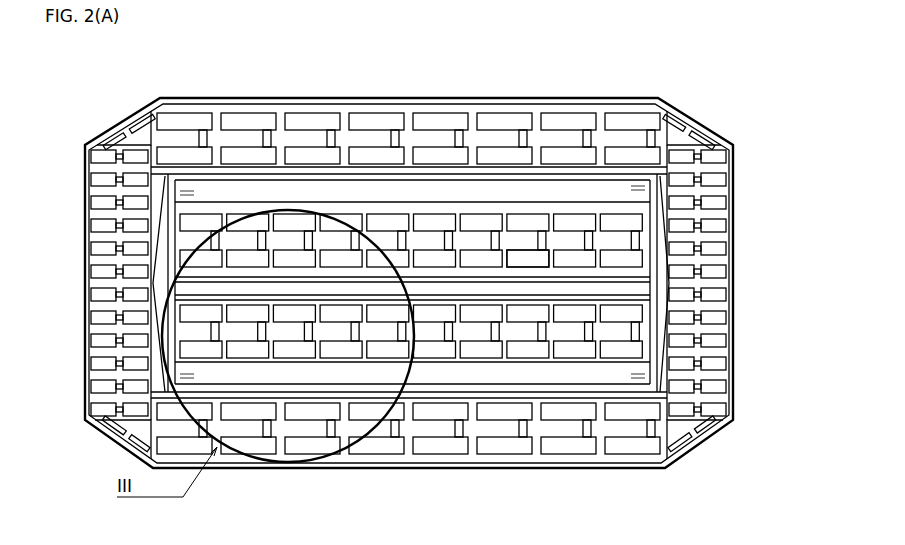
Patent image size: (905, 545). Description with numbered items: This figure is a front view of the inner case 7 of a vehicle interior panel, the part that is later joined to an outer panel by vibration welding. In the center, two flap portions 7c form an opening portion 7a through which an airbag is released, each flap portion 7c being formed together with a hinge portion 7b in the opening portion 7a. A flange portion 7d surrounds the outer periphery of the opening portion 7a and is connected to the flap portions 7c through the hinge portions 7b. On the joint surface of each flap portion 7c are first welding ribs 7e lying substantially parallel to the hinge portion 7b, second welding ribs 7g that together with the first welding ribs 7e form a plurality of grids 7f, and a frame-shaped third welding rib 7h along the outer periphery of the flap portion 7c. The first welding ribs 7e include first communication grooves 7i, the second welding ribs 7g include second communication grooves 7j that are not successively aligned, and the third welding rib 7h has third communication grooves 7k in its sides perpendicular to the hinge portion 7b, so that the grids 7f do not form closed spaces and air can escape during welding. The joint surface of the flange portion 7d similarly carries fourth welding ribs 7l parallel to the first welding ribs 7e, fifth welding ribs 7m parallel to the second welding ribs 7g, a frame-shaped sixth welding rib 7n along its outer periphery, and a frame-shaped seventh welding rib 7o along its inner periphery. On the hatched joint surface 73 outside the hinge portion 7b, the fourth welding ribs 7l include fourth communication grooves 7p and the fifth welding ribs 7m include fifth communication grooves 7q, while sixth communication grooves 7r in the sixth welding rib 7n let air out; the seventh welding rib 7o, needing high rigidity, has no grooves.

The inner case 7 is at (248, 62).
The opening portion 7a is at (725, 140).
The hinge portion 7b is at (405, 192).
The flap portion 7c is at (162, 250).
The flange portion 7d is at (683, 110).
The first welding rib 7e is at (450, 200).
The grid 7f is at (503, 234).
The second welding rib 7g is at (361, 213).
The third welding rib 7h is at (243, 207).
The first communication groove 7i is at (525, 234).
The second communication groove 7j is at (593, 234).
The third communication groove 7k is at (124, 131).
The fourth welding rib 7l is at (710, 277).
The fifth welding rib 7m is at (700, 298).
The sixth welding rib 7n is at (735, 312).
The seventh welding rib 7o is at (733, 404).
The fourth communication groove 7p is at (573, 447).
The fifth communication groove 7q is at (720, 342).
The sixth communication groove 7r is at (693, 347).
The joint surface 73 is at (462, 447).